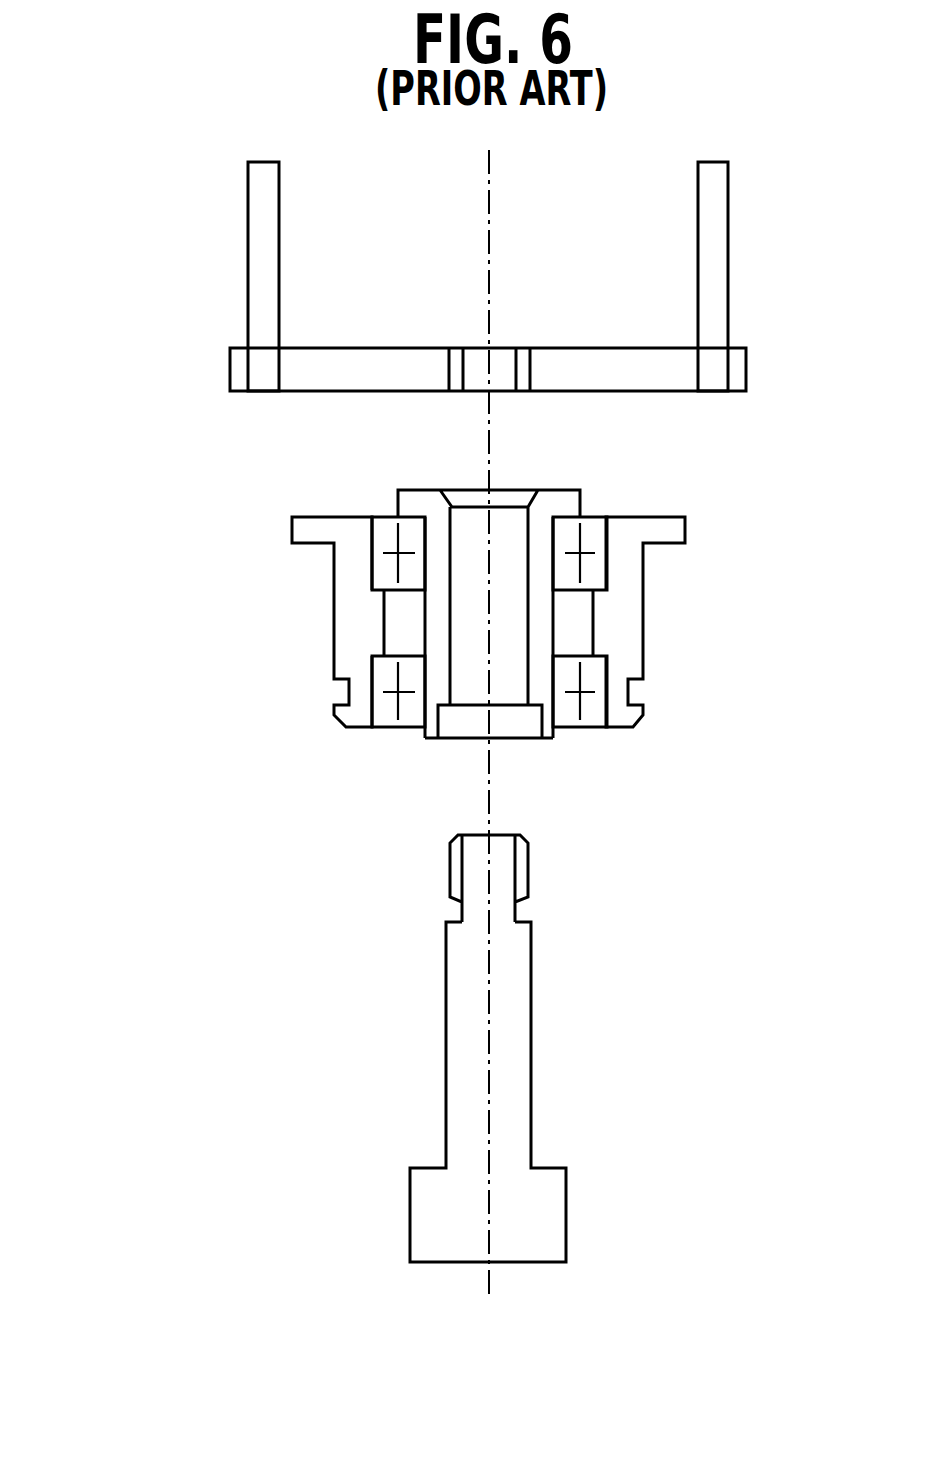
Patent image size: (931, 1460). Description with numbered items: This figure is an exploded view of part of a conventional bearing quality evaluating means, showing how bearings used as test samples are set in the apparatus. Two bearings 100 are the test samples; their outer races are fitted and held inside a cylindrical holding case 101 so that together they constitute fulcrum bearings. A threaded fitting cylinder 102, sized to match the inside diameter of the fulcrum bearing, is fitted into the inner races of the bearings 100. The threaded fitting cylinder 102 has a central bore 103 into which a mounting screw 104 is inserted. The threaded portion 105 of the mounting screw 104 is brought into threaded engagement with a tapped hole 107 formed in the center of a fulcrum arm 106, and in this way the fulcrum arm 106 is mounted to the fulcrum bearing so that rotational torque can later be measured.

The bearing 100 is at (615, 573).
The cylindrical holding case 101 is at (362, 632).
The threaded fitting cylinder 102 is at (545, 627).
The central bore 103 is at (512, 543).
The mounting screw 104 is at (468, 992).
The threaded portion 105 is at (523, 887).
The fulcrum arm 106 is at (230, 375).
The tapped hole 107 is at (507, 365).